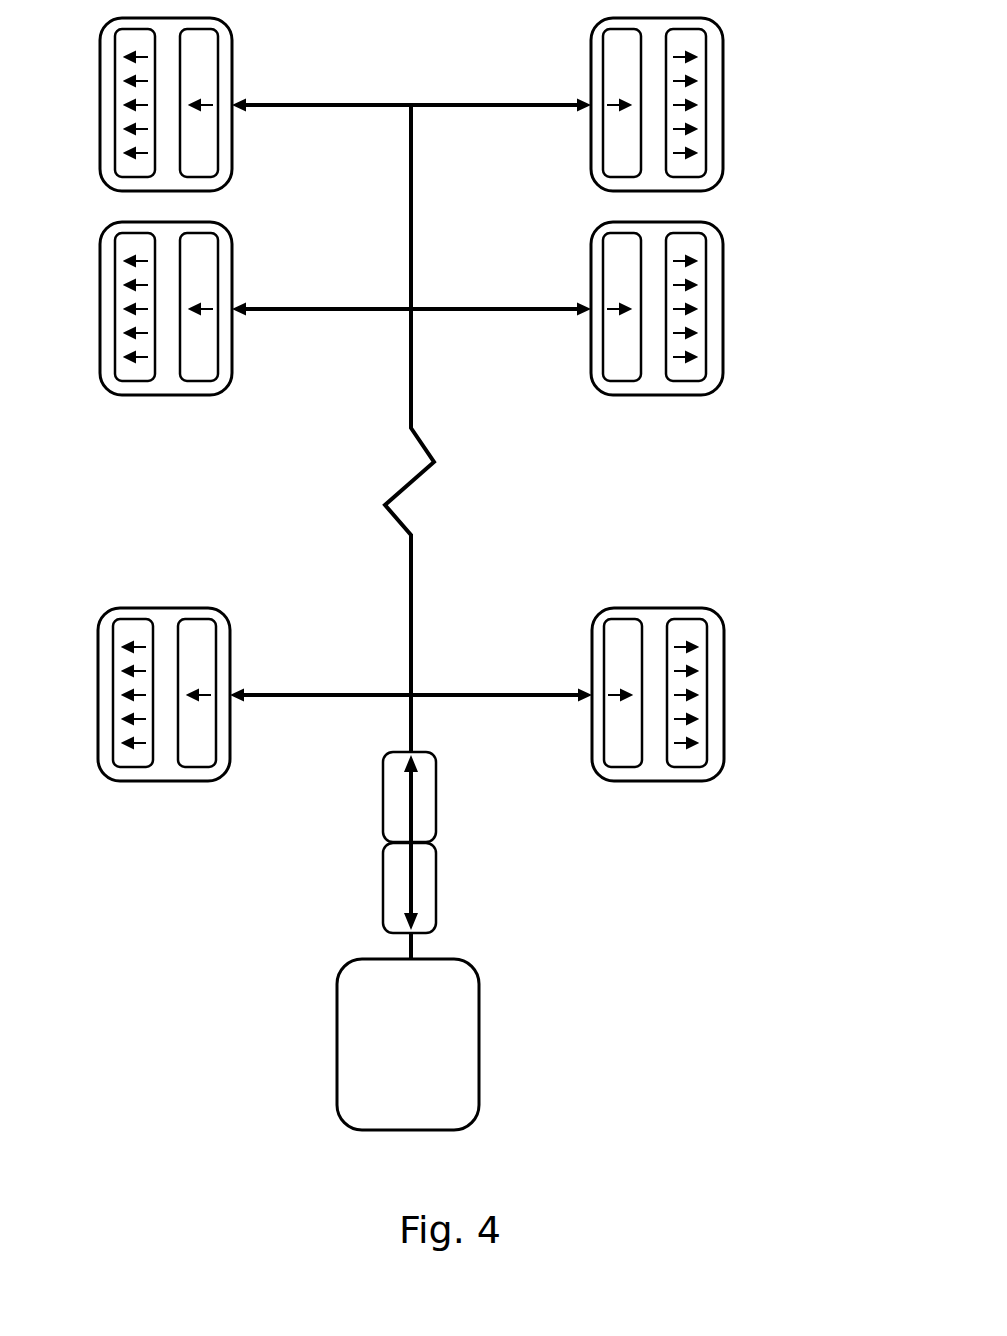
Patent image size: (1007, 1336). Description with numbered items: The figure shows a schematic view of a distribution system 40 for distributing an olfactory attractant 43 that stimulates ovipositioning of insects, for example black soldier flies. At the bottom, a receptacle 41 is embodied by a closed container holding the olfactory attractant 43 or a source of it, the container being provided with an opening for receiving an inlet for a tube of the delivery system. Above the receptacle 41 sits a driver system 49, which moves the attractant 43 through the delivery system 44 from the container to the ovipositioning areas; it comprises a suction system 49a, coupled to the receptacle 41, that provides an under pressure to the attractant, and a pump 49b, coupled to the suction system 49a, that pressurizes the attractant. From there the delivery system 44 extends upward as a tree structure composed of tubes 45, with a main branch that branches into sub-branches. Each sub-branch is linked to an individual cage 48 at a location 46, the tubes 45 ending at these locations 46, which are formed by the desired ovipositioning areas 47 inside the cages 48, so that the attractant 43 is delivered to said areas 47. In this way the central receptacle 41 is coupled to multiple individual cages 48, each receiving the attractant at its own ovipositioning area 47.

The distribution system 40 is at (819, 50).
The receptacle 41 is at (371, 1044).
The olfactory attractant 43 is at (350, 1085).
The delivery system 44 is at (325, 512).
The tubes 45 is at (300, 108).
The locations 46 is at (233, 113).
The ovipositioning areas 47 is at (118, 92).
The cages 48 is at (101, 163).
The driver system 49 is at (379, 842).
The suction system 49a is at (437, 890).
The pump 49b is at (437, 790).